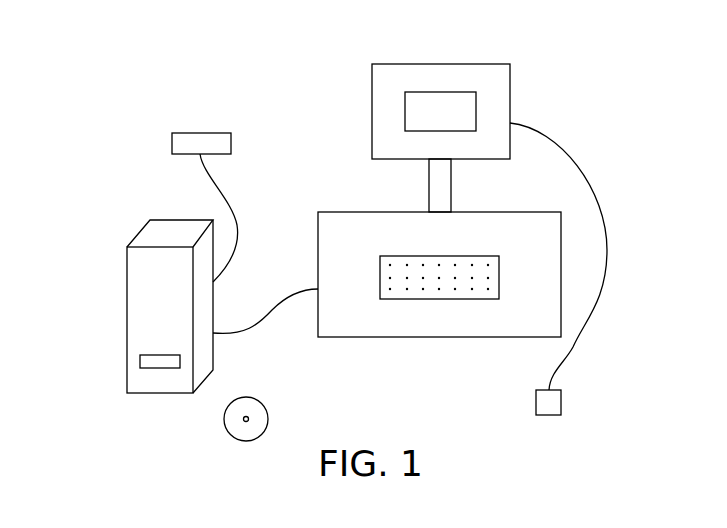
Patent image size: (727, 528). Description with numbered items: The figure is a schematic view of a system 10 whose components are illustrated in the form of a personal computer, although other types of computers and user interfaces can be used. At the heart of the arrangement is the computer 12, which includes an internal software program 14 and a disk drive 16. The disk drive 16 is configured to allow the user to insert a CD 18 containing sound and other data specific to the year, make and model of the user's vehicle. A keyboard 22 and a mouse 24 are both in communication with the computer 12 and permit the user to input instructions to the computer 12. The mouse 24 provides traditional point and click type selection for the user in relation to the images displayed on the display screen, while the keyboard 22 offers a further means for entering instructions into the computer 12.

The system 10 is at (312, 63).
The computer 12 is at (138, 232).
The internal software program 14 is at (193, 133).
The disk drive 16 is at (140, 360).
The CD 18 is at (268, 410).
The keyboard 22 is at (411, 299).
The mouse 24 is at (561, 398).